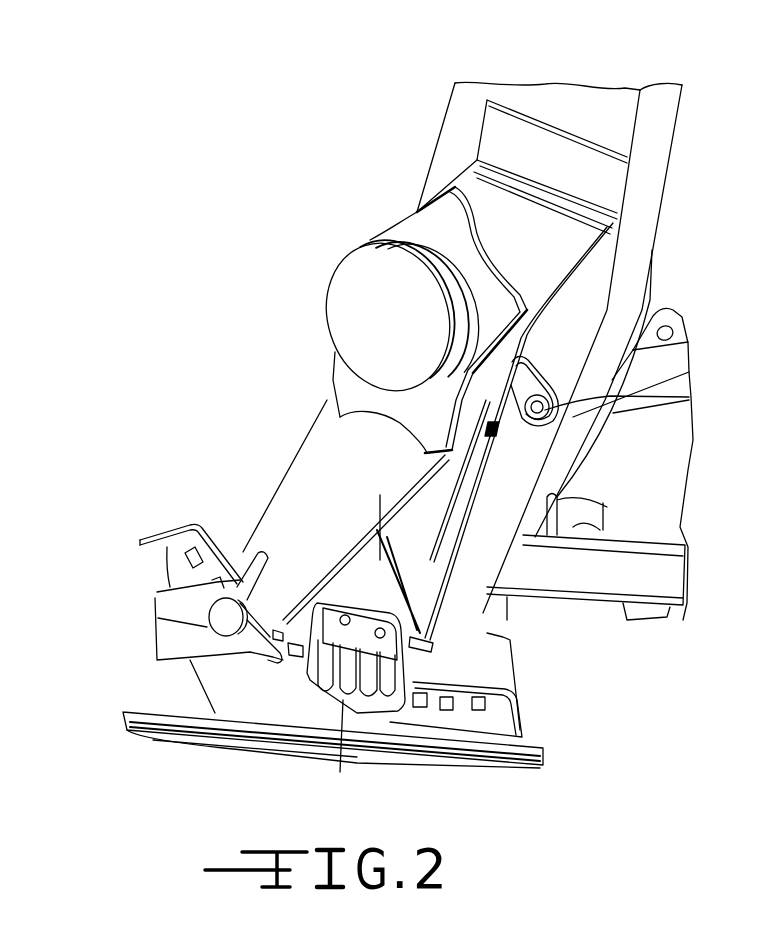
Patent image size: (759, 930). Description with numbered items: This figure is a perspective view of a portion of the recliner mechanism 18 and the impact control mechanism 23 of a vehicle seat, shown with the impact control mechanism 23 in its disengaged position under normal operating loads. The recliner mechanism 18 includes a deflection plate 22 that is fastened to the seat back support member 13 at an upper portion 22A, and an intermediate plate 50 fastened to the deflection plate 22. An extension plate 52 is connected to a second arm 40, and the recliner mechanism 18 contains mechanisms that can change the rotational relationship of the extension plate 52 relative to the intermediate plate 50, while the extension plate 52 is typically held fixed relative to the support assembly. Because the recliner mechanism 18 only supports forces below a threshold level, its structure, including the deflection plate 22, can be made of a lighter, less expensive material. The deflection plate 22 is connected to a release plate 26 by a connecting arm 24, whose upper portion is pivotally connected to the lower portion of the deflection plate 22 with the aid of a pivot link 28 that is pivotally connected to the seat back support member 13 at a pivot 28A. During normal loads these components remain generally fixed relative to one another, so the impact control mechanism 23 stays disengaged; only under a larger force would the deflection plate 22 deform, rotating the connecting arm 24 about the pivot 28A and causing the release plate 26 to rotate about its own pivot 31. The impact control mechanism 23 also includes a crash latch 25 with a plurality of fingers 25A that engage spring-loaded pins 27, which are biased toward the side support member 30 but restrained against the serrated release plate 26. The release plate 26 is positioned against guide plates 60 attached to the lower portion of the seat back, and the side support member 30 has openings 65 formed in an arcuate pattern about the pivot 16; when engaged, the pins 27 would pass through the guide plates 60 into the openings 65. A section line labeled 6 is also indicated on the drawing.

The seat back support member 13 is at (650, 167).
The pivot 16 is at (308, 222).
The recliner mechanism 18 is at (305, 306).
The deflection plate 22 is at (573, 250).
The upper portion 22A is at (502, 148).
The impact control mechanism 23 is at (452, 644).
The connecting arm 24 is at (453, 522).
The crash latch 25 is at (301, 595).
The fingers 25A is at (283, 655).
The release plate 26 is at (420, 705).
The pins 27 is at (330, 680).
The pivot link 28 is at (532, 360).
The pivot 28A is at (565, 415).
The side support member 30 is at (180, 532).
The pivot 31 is at (360, 548).
The second arm 40 is at (323, 452).
The intermediate plate 50 is at (445, 223).
The extension plate 52 is at (348, 402).
The guide plates 60 is at (397, 712).
The openings 65 is at (488, 720).
The section line 6- 6 is at (350, 503).